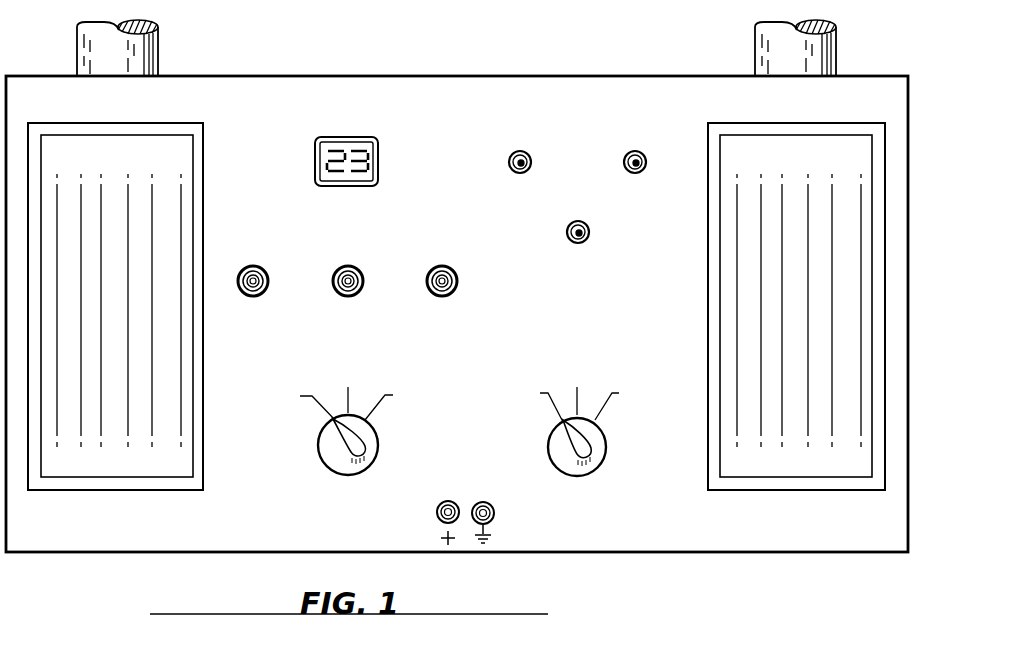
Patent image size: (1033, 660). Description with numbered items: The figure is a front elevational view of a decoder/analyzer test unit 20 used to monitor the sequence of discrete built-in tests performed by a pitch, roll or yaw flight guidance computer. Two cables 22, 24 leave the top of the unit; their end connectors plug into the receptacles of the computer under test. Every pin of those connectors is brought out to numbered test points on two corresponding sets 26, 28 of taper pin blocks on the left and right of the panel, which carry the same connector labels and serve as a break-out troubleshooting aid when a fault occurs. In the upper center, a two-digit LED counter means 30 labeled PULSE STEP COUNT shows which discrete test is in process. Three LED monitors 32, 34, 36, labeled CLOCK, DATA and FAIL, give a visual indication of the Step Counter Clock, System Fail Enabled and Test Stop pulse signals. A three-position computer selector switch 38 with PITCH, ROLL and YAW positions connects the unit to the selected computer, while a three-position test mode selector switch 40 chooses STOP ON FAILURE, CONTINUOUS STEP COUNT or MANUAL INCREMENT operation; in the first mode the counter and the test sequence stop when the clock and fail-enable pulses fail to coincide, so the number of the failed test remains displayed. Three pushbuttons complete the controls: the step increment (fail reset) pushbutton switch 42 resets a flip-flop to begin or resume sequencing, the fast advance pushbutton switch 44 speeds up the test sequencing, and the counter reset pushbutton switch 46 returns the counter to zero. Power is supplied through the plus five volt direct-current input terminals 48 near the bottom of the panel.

The decoder/analyzer test unit 20 is at (437, 76).
The cable 22 is at (158, 46).
The cable 24 is at (836, 46).
The set of taper pin blocks 26 is at (175, 123).
The set of taper pin blocks 28 is at (840, 123).
The counter means 30 is at (380, 167).
The LED monitor 32 is at (590, 234).
The LED monitor 34 is at (646, 159).
The LED monitor 36 is at (531, 159).
The computer selector switch 38 is at (608, 443).
The test mode selector switch 40 is at (326, 450).
The step increment (fail reset) pushbutton switch 42 is at (262, 294).
The fast advance pushbutton switch 44 is at (357, 294).
The counter reset pushbutton switch 46 is at (451, 294).
The +5 volts d-c input terminals 48 is at (437, 519).